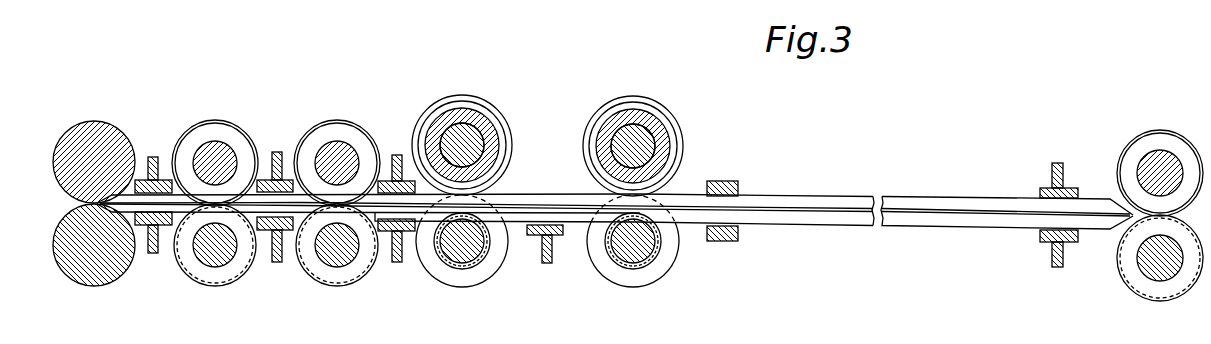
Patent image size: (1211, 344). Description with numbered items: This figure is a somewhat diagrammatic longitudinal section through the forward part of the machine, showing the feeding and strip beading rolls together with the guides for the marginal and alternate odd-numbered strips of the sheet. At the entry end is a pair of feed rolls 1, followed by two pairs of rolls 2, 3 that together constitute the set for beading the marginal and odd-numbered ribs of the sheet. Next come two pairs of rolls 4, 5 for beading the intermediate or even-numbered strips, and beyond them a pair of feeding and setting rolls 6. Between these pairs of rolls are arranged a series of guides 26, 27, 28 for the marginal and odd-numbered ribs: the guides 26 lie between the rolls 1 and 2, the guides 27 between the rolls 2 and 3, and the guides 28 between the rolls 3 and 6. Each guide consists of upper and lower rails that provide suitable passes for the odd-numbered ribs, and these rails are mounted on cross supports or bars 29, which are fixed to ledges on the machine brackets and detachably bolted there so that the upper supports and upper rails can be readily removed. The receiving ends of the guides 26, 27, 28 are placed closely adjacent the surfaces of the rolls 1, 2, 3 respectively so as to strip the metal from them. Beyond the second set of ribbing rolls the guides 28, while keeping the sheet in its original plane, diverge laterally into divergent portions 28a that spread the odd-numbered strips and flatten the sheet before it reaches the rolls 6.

The feed rolls 1 is at (94, 132).
The beading rolls 2 is at (224, 130).
The beading rolls 3 is at (331, 131).
The beading rolls 4 is at (478, 122).
The beading rolls 5 is at (639, 117).
The feeding and setting rolls 6 is at (1151, 142).
The guides 26 is at (165, 212).
The guides 27 is at (292, 196).
The guides 28 is at (393, 219).
The divergent portions of the guides 28a is at (853, 219).
The cross supports 29 is at (152, 158).